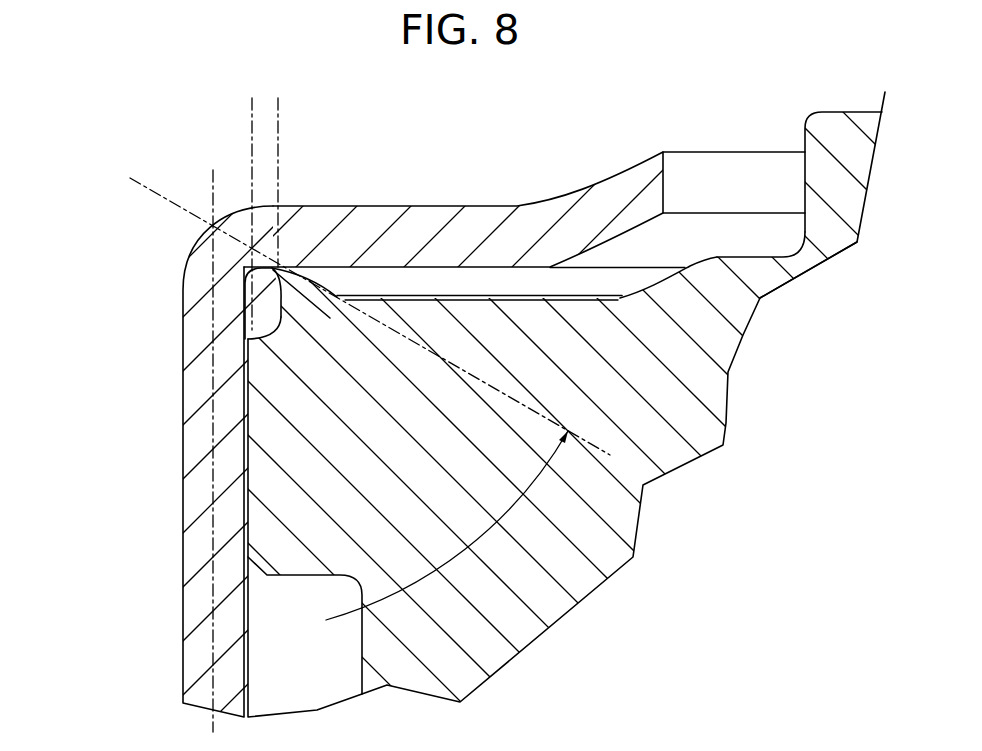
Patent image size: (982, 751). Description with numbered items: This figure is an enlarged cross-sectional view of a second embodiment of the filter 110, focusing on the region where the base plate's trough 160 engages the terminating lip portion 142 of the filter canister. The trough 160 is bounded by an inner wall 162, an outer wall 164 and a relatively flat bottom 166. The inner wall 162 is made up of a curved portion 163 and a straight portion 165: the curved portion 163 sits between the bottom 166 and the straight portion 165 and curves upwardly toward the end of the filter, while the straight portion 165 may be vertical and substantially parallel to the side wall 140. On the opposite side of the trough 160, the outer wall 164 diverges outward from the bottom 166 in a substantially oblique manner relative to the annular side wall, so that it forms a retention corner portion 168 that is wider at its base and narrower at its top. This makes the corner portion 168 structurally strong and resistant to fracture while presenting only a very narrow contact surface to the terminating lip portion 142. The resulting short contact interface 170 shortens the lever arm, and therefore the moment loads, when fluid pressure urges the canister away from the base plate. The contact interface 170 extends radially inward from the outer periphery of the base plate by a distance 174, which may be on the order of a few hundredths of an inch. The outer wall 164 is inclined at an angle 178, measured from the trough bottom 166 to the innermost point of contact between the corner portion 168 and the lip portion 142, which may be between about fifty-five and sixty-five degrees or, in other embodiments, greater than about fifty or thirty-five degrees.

The filter 110 is at (140, 664).
The side wall 140 is at (205, 563).
The terminating lip portion 142 is at (373, 227).
The trough 160 is at (537, 288).
The inner wall 162 is at (750, 254).
The curved portion 163 is at (683, 261).
The outer wall 164 is at (322, 282).
The straight portion 165 is at (805, 175).
The bottom 166 is at (447, 297).
The retention corner portion 168 is at (267, 288).
The contact interface 170 is at (263, 338).
The distance 174 is at (215, 116).
The angle 178 is at (217, 628).